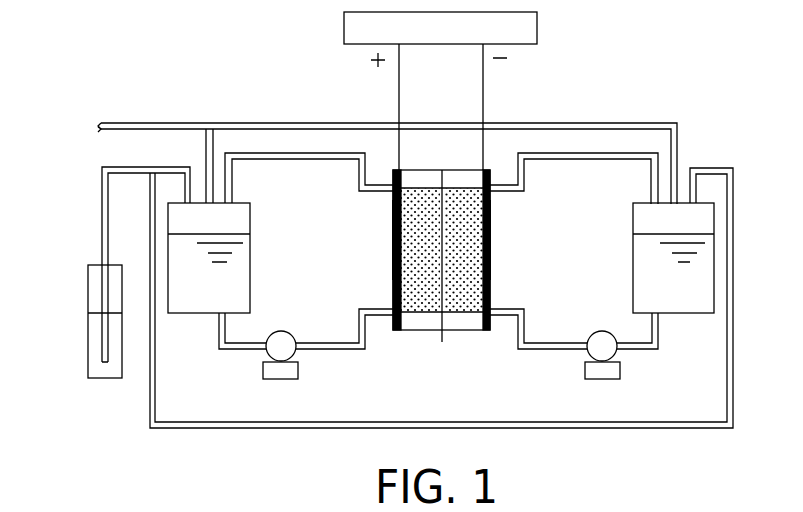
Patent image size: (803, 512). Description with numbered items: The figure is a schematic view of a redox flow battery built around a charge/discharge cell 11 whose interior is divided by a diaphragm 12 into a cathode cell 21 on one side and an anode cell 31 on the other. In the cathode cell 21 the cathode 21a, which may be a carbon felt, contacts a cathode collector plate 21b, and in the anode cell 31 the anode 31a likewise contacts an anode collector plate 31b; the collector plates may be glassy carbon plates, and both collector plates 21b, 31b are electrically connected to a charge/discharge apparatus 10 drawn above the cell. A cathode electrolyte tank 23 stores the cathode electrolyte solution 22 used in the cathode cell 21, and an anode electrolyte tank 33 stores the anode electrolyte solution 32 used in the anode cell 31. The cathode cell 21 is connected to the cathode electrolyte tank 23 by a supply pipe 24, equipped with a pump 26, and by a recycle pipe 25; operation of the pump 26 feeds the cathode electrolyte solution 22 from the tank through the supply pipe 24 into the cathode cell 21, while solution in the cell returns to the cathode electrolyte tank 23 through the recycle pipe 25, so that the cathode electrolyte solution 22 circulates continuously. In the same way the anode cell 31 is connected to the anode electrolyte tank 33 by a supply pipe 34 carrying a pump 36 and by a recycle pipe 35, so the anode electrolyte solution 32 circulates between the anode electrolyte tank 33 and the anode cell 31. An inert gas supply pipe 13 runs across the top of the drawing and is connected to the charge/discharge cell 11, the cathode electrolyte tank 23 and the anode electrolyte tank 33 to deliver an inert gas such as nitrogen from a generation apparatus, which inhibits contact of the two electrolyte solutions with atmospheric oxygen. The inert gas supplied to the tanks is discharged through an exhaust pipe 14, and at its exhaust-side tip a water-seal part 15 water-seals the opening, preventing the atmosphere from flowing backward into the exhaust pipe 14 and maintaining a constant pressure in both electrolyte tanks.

The charge/discharge apparatus 10 is at (539, 27).
The charge/discharge cell 11 is at (465, 169).
The diaphragm 12 is at (442, 170).
The inert gas supply pipe 13 is at (145, 123).
The exhaust pipe 14 is at (101, 205).
The water-seal part 15 is at (88, 330).
The cathode cell 21 is at (430, 318).
The cathode 21a is at (412, 315).
The cathode collector plate 21b is at (393, 240).
The cathode electrolyte solution 22 is at (250, 260).
The cathode electrolyte tank 23 is at (250, 215).
The supply pipe 24 is at (316, 350).
The recycle pipe 25 is at (300, 153).
The pump 26 is at (281, 331).
The anode cell 31 is at (470, 318).
The anode 31a is at (477, 315).
The anode collector plate 31b is at (490, 238).
The anode electrolyte solution 32 is at (633, 265).
The anode electrolyte tank 33 is at (633, 218).
The supply pipe 34 is at (563, 352).
The recycle pipe 35 is at (573, 153).
The pump 36 is at (602, 331).